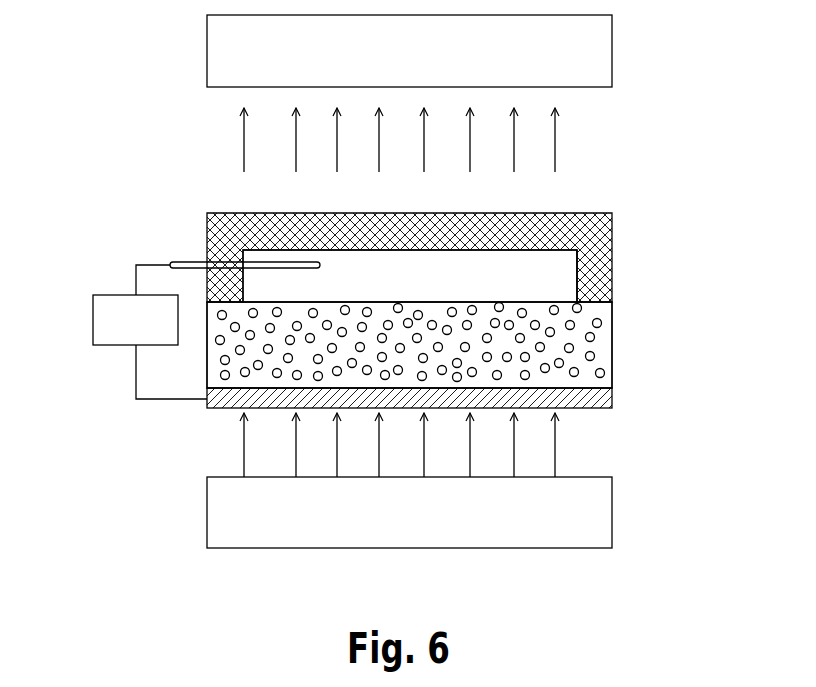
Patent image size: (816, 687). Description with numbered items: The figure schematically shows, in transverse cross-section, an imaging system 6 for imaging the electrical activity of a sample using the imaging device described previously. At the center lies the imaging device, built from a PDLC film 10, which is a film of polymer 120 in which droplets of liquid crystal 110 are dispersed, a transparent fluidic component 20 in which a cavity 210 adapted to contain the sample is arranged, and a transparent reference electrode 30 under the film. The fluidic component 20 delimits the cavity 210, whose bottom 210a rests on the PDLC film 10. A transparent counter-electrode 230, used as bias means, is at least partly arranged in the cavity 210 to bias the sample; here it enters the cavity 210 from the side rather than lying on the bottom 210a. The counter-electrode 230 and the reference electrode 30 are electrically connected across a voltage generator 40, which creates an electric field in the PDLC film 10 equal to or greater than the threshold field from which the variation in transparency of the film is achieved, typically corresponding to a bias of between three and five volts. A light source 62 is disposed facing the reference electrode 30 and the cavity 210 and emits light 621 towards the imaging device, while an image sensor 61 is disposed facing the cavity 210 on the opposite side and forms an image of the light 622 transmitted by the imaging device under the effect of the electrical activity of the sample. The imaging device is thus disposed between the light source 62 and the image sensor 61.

The imaging system 6 is at (86, 60).
The image sensor 61 is at (207, 45).
The light source 62 is at (207, 513).
The light emitted by the light source 621 is at (243, 443).
The transmitted light 622 is at (243, 133).
The fluidic component 20 is at (585, 213).
The cavity 210 is at (453, 277).
The bottom of the cavity 210a is at (549, 297).
The counter-electrode 230 is at (197, 261).
The voltage generator 40 is at (110, 316).
The PDLC film 10 is at (690, 297).
The droplets of liquid crystal 110 is at (603, 322).
The polymer 120 is at (600, 345).
The reference electrode 30 is at (612, 393).